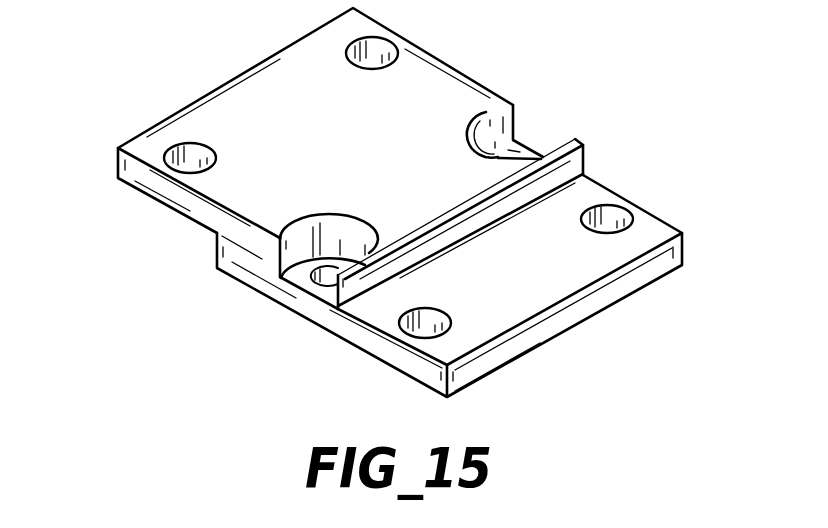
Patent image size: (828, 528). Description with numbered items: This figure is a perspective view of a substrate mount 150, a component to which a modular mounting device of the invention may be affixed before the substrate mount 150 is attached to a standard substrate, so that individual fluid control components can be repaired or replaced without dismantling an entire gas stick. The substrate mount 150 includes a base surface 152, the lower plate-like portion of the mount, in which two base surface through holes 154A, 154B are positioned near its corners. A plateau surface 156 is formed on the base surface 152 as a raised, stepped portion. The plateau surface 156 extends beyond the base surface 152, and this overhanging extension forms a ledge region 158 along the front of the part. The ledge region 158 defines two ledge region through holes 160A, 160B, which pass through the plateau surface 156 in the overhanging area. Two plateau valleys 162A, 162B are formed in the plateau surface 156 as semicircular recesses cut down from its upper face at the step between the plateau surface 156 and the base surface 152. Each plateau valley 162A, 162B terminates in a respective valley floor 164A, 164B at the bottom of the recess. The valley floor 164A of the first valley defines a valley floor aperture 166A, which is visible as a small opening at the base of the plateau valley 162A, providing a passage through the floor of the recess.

The substrate mount 150 is at (393, 205).
The base surface 152 is at (662, 255).
The base surface through hole 154A is at (450, 320).
The base surface through hole 154B is at (612, 226).
The plateau surface 156 is at (290, 175).
The ledge region 158 is at (137, 168).
The ledge region through hole 160A is at (193, 147).
The ledge region through hole 160B is at (357, 48).
The plateau valley 162A is at (292, 258).
The plateau valley 162B is at (500, 127).
The valley floor 164A is at (351, 282).
The valley floor 164B is at (518, 150).
The valley floor aperture 166A is at (328, 280).